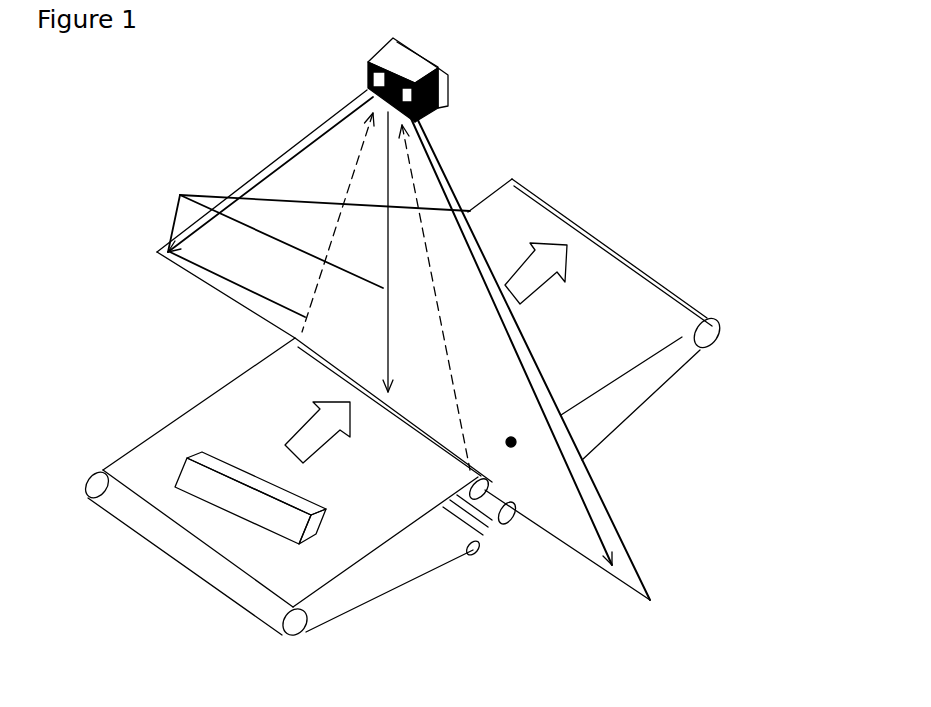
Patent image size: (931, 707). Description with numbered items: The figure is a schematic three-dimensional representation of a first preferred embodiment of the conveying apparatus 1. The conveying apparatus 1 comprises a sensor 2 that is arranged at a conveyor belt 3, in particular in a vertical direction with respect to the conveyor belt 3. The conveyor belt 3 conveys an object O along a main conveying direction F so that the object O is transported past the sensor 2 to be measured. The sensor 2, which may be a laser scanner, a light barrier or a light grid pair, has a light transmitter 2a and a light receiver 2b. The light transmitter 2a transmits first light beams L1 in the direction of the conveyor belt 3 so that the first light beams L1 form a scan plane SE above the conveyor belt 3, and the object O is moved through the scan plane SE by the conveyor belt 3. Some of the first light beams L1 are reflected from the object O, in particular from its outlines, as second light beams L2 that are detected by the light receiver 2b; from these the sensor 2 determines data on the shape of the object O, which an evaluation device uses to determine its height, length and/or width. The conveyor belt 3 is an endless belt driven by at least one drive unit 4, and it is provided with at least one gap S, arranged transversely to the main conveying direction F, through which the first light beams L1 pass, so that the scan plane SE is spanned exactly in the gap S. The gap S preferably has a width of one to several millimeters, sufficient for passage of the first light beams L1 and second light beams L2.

The conveying apparatus 1 is at (618, 172).
The sensor 2 is at (440, 68).
The light transmitter 2a is at (360, 72).
The light receiver 2b is at (440, 114).
The conveyor belt 3 is at (630, 300).
The drive unit 4 is at (717, 332).
The main conveying direction F is at (297, 430).
The first light beams L1 is at (180, 195).
The second light beams L2 is at (440, 306).
The object O is at (180, 463).
The gap S is at (497, 510).
The scan plane SE is at (516, 444).